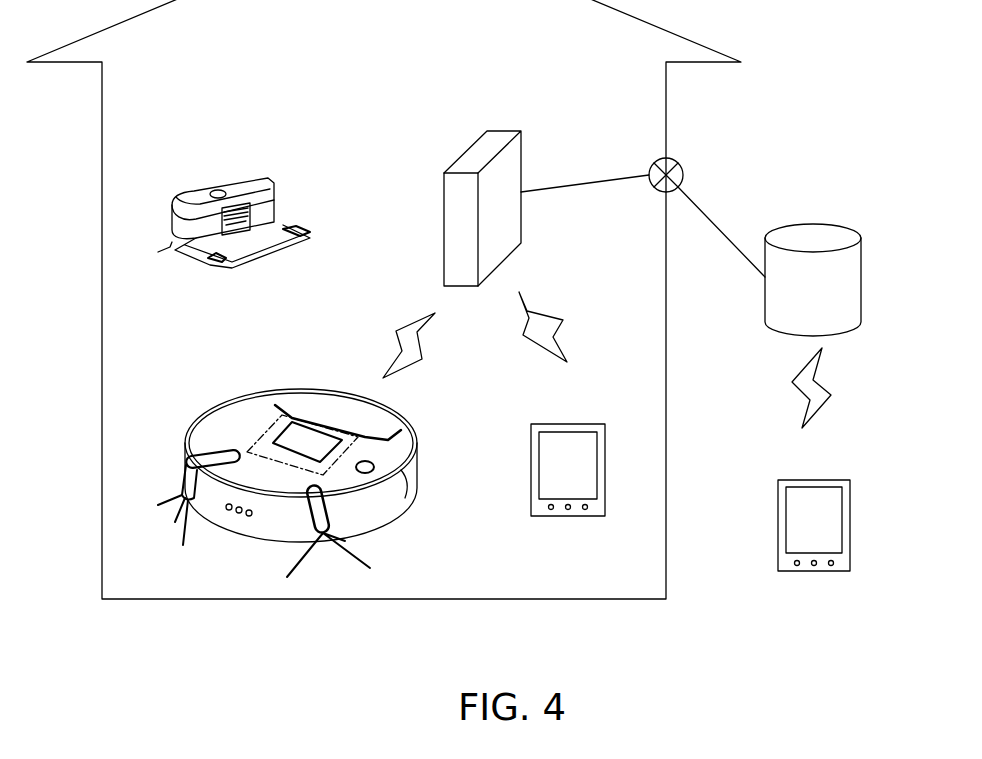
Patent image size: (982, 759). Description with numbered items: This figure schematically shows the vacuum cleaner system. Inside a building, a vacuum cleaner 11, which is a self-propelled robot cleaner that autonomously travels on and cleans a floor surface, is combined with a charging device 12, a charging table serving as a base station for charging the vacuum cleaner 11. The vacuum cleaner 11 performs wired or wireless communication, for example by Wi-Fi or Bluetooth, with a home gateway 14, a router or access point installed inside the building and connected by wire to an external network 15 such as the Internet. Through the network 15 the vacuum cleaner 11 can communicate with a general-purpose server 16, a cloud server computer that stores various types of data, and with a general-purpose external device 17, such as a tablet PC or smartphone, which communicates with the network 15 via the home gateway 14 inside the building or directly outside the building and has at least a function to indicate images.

The vacuum cleaner 11 is at (293, 364).
The charging device 12 is at (298, 182).
The home gateway 14 is at (505, 131).
The network 15 is at (722, 230).
The server 16 is at (863, 280).
The external device 17 is at (568, 423).